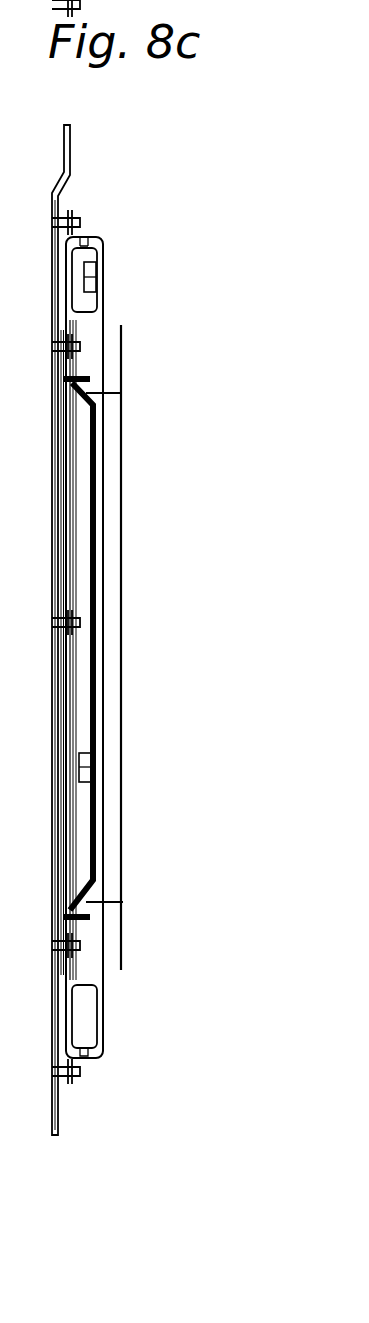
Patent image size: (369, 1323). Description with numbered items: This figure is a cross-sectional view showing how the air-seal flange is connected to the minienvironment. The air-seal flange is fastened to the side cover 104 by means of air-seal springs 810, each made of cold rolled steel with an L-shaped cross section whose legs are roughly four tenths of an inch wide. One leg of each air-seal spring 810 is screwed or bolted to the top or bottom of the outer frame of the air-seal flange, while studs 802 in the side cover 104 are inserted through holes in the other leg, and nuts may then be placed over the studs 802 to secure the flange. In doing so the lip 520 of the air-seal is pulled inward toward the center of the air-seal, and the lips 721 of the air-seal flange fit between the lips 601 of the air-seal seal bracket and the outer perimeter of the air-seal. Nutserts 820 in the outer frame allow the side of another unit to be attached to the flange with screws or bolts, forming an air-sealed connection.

The side cover 104 is at (58, 190).
The studs 802 is at (73, 222).
The air-seal spring 810 is at (92, 237).
The nutserts 820 is at (90, 272).
The lips 601 is at (78, 377).
The lip 520 is at (121, 345).
The lips 721 is at (105, 392).